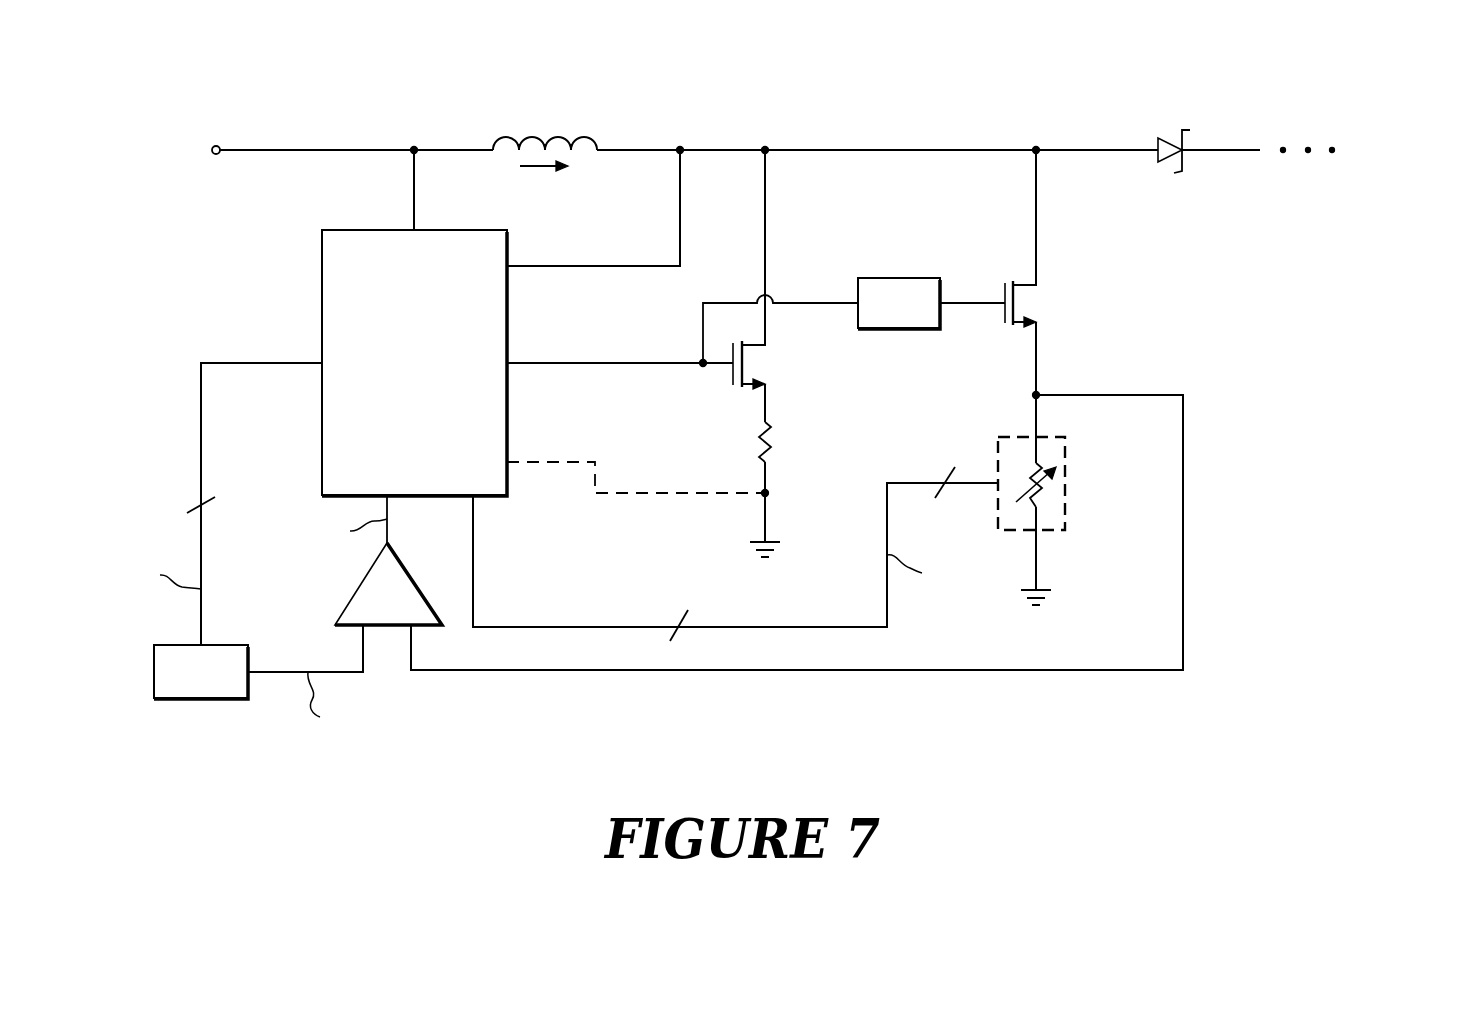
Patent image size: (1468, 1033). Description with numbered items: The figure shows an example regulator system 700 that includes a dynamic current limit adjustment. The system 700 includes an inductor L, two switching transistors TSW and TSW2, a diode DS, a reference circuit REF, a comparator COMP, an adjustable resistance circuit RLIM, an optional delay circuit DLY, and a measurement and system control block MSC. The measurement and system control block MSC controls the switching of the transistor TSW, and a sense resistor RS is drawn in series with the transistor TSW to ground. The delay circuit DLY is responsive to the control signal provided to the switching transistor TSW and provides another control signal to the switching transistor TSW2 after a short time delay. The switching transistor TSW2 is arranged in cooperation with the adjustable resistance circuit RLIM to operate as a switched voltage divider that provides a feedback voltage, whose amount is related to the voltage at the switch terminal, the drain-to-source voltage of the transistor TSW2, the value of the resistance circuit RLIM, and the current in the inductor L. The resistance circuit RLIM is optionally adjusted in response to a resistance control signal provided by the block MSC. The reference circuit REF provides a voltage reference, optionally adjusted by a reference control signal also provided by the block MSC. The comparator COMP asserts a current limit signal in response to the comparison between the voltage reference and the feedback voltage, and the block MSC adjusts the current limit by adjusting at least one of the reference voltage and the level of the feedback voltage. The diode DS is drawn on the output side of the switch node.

The regulator system 700 is at (1380, 102).
The inductor L is at (545, 129).
The diode DS is at (1166, 132).
The measurement and system control block MSC is at (414, 363).
The switching transistor TSW is at (749, 286).
The sense resistor RS is at (765, 442).
The delay circuit DLY is at (899, 303).
The switching transistor TSW2 is at (1020, 306).
The adjustable resistance circuit RLIM is at (1031, 483).
The comparator COMP is at (388, 584).
The reference circuit REF is at (201, 672).